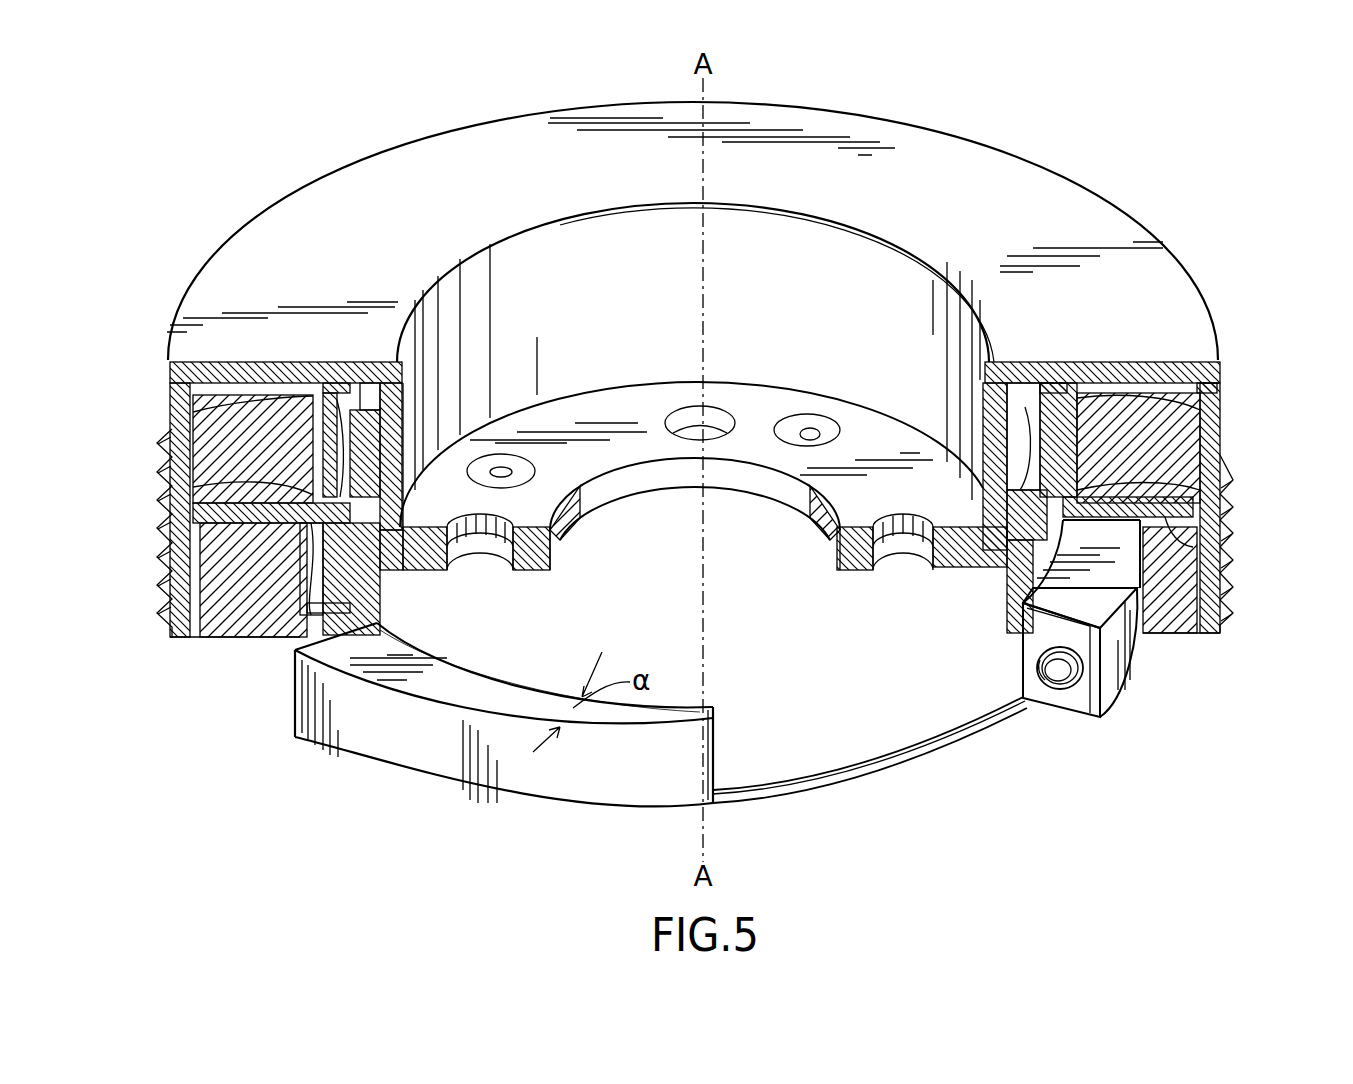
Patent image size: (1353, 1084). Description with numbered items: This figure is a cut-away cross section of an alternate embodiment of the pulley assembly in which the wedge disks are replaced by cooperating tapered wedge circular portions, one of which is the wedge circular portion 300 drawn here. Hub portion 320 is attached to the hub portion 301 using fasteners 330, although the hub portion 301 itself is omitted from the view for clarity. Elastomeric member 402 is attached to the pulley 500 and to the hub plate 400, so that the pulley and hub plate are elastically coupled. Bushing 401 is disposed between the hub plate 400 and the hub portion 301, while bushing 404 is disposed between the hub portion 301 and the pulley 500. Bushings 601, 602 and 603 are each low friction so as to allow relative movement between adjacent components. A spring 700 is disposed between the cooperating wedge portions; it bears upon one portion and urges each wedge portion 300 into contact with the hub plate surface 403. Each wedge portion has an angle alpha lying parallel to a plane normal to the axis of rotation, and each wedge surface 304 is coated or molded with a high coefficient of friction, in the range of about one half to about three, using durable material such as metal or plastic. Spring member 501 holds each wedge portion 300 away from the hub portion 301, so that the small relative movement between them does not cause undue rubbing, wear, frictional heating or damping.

The hub portion 320 is at (1045, 163).
The pulley 500 is at (1226, 463).
The elastomeric member 402 is at (243, 451).
The bushing 404 is at (193, 580).
The hub plate 400 is at (230, 507).
The hub plate surface 403 is at (332, 593).
The bushing 602 is at (1220, 385).
The bushing 603 is at (1047, 383).
The bushing 601 is at (1232, 557).
The bushing 401 is at (1022, 568).
The wedge circular portion 300 is at (437, 775).
The hub portion 301 is at (818, 523).
The fasteners 330 is at (523, 477).
The wedge surface 304 is at (463, 665).
The spring 700 is at (1062, 690).
The spring member 501 is at (960, 742).